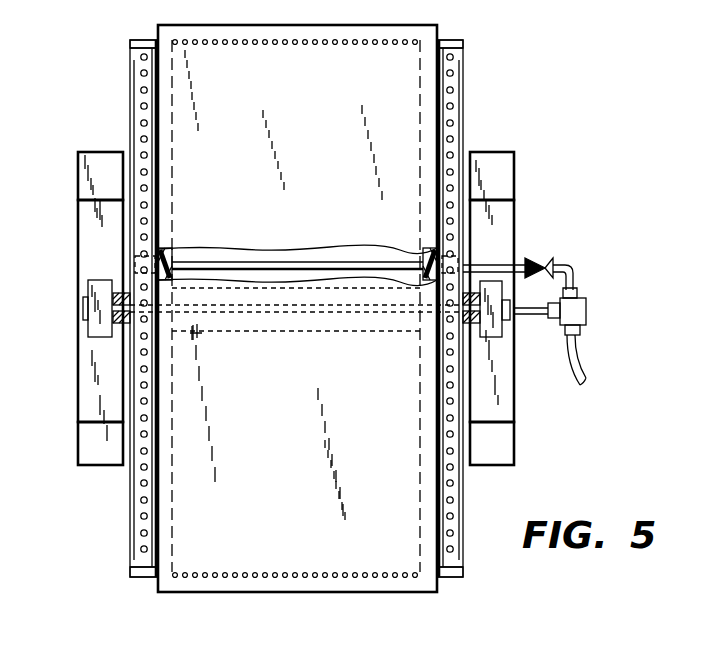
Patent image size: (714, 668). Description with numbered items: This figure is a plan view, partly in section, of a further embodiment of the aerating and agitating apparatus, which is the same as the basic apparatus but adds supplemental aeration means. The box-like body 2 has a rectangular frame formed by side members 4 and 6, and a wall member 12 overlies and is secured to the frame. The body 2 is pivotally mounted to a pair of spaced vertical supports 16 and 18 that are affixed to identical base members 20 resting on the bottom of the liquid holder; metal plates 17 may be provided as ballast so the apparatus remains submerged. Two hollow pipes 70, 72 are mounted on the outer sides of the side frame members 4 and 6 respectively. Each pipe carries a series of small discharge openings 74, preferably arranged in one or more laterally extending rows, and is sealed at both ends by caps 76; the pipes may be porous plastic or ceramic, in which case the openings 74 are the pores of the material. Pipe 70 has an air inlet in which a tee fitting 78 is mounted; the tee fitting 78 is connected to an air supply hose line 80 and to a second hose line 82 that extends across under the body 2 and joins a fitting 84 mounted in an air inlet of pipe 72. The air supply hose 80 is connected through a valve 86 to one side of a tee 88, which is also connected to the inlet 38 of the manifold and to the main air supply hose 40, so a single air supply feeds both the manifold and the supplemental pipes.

The body 2 is at (211, 604).
The side member 4 is at (419, 92).
The side member 6 is at (174, 193).
The wall member 12 is at (284, 537).
The vertical support 16 is at (492, 338).
The metal plate 17 is at (84, 183).
The vertical support 18 is at (96, 325).
The base member 20 is at (80, 390).
The inlet end of manifold 38 is at (532, 307).
The flexible hose 40 is at (579, 363).
The hollow pipe 70 is at (452, 533).
The hollow pipe 72 is at (135, 520).
The discharge openings 74 is at (141, 106).
The caps 76 is at (144, 38).
The tee fitting 78 is at (449, 260).
The air supply hose line 80 is at (500, 266).
The second hose line 82 is at (272, 265).
The fitting 84 is at (150, 263).
The valve 86 is at (546, 262).
The tee 88 is at (587, 310).